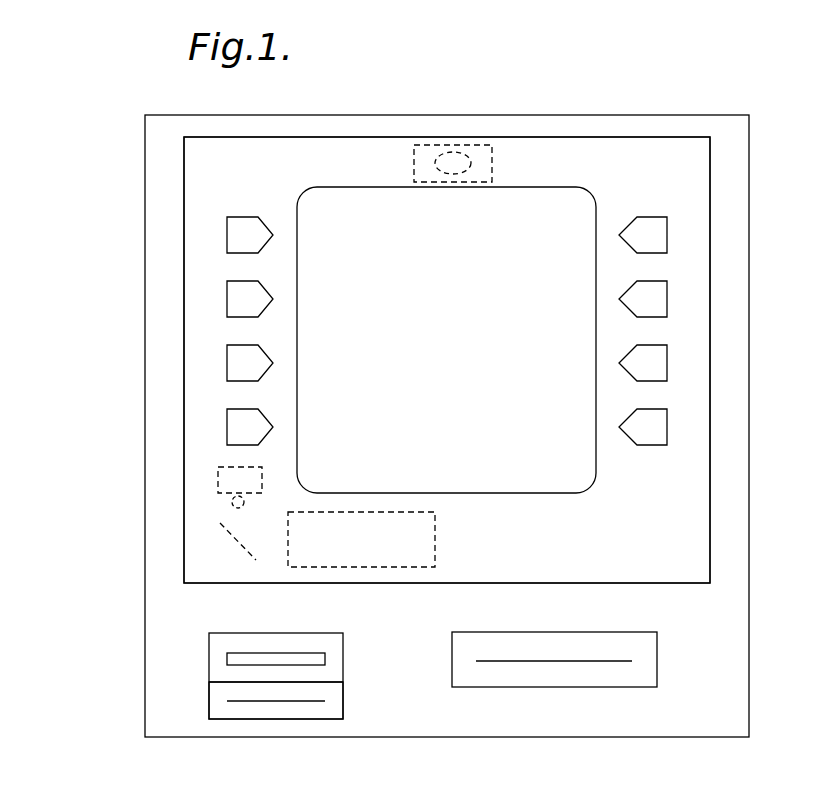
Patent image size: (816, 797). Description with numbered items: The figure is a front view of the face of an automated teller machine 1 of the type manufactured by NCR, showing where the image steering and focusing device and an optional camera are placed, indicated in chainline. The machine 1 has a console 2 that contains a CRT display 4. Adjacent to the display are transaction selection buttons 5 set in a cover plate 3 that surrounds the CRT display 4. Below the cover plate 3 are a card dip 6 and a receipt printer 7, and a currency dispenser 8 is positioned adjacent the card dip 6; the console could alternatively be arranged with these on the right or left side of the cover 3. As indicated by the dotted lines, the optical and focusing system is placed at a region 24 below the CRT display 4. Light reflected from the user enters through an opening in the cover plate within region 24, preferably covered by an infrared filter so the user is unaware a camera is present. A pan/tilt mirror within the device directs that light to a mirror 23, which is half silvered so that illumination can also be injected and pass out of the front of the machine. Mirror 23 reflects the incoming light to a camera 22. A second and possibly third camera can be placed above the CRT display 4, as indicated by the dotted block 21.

The automated teller machine 1 is at (704, 96).
The console 2 is at (571, 125).
The cover plate 3 is at (660, 525).
The CRT display 4 is at (463, 338).
The transaction selection buttons 5 is at (233, 240).
The card dip 6 is at (216, 661).
The receipt printer 7 is at (262, 714).
The currency dispenser 8 is at (582, 680).
The dotted block 21 is at (424, 145).
The camera 22 is at (217, 480).
The mirror 23 is at (240, 543).
The region 24 is at (436, 535).